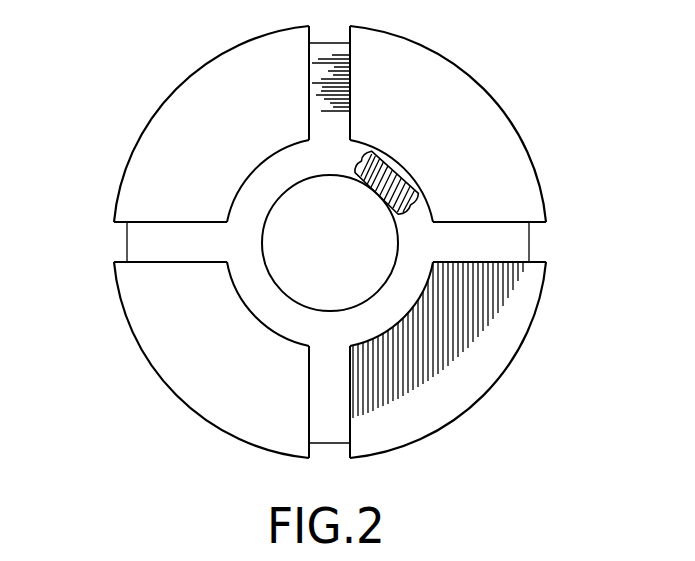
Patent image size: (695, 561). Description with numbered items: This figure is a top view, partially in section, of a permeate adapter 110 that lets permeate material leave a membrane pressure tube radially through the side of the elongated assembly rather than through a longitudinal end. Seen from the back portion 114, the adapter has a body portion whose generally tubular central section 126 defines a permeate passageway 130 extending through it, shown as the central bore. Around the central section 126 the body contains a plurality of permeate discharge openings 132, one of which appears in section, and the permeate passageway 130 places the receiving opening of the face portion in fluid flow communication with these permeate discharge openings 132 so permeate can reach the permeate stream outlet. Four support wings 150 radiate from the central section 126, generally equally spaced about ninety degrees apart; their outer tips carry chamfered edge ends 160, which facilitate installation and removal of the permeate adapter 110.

The permeate adapter 110 is at (530, 68).
The back portion 114 is at (302, 393).
The generally tubular central section 126 is at (224, 183).
The permeate passageway 130 is at (303, 218).
The permeate discharge openings 132 is at (415, 187).
The support wings 150 is at (459, 222).
The chamfered edge ends 160 is at (120, 239).